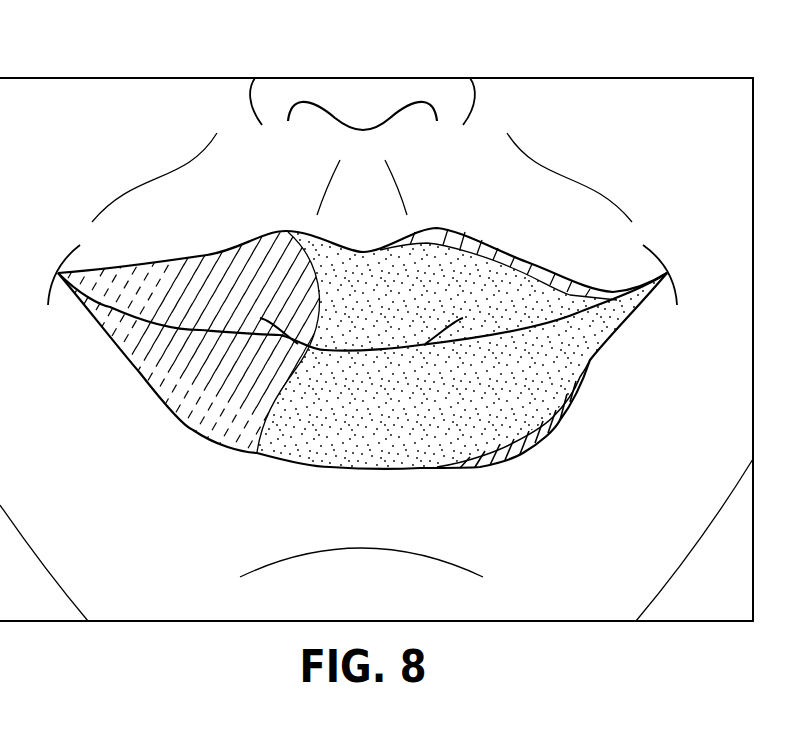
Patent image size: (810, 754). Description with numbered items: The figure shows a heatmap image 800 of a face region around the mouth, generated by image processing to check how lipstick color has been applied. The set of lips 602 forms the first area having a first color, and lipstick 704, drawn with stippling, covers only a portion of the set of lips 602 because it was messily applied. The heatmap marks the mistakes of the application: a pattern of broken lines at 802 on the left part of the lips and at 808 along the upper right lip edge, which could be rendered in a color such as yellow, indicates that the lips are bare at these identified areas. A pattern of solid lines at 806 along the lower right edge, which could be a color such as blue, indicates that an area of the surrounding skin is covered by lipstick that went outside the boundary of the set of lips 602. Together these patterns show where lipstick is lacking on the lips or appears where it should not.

The heatmap image 800 is at (135, 78).
The set of lips 602 is at (140, 382).
The bare lip area pattern 802 is at (197, 420).
The lipstick 704 is at (345, 450).
The skin covered by lipstick pattern 806 is at (520, 455).
The bare lip area pattern 808 is at (447, 240).